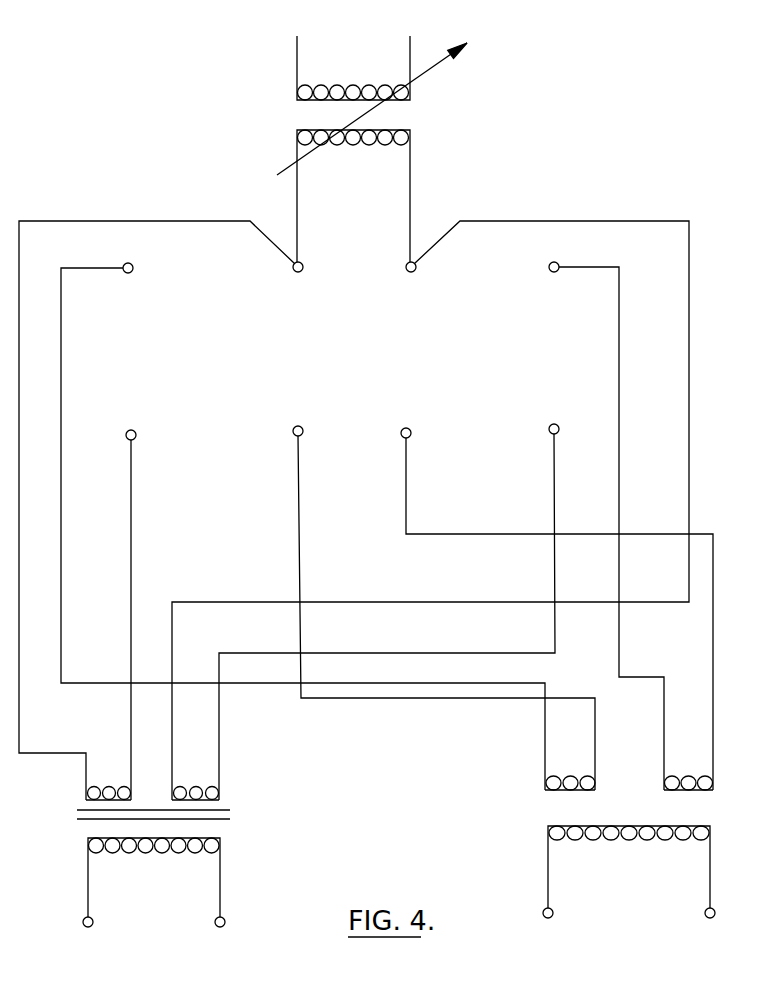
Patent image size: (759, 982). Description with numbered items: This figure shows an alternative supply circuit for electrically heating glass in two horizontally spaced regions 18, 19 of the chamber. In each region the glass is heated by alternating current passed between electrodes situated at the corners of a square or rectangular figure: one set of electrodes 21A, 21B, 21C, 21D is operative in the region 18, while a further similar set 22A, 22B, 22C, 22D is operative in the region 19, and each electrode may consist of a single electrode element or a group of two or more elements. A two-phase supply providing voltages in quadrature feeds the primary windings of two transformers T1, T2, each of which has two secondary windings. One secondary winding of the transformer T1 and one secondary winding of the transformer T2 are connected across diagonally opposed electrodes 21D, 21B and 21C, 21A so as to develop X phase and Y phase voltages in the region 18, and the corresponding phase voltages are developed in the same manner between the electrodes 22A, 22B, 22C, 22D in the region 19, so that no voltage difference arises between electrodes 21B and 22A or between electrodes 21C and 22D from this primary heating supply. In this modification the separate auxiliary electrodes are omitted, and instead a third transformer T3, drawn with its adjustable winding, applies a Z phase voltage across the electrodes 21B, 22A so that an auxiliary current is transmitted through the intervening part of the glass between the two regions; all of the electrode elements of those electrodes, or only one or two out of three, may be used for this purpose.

The region 18 is at (241, 361).
The region 19 is at (516, 359).
The electrode 21A is at (303, 526).
The electrode 21B is at (173, 510).
The electrode 21C is at (438, 593).
The electrode 21D is at (135, 598).
The electrode 22A is at (430, 510).
The electrode 22B is at (605, 526).
The electrode 22C is at (404, 596).
The electrode 22D is at (556, 593).
The transformer T1 is at (124, 857).
The transformer T2 is at (599, 847).
The transformer T3 is at (355, 149).